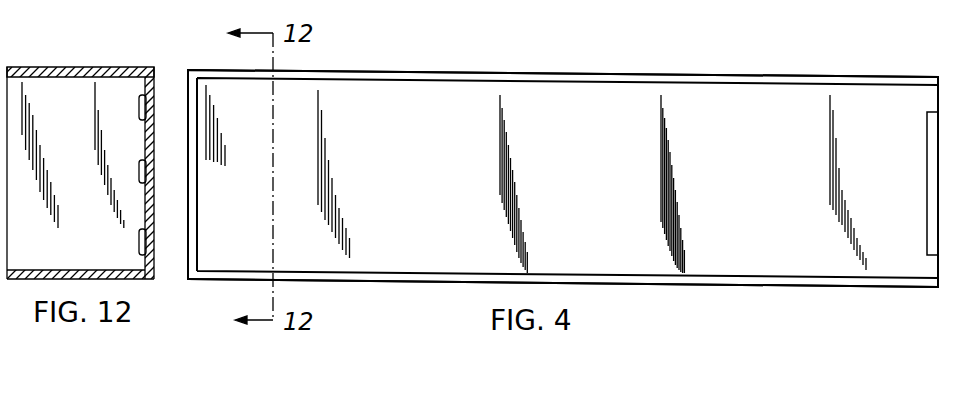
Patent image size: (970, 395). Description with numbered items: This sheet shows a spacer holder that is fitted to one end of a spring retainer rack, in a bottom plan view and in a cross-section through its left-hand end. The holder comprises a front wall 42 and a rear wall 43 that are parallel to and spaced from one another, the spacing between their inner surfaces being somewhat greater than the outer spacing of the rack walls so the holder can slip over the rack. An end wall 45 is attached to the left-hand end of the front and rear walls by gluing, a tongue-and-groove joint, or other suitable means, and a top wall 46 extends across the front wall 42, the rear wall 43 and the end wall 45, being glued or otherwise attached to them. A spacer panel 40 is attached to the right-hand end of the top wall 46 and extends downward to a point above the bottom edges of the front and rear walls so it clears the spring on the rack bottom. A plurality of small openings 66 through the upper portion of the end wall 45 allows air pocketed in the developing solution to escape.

In FIG. 4, the spacer panel 40 is at (927, 183).
In FIG. 12, the front wall 42 is at (42, 270).
In FIG. 4, the front wall 42 is at (705, 282).
In FIG. 12, the rear wall 43 is at (88, 67).
In FIG. 4, the rear wall 43 is at (487, 73).
In FIG. 12, the end wall 45 is at (68, 175).
In FIG. 4, the end wall 45 is at (197, 178).
In FIG. 12, the top wall 46 is at (150, 230).
In FIG. 4, the top wall 46 is at (620, 255).
In FIG. 12, the small openings 66 is at (139, 240).